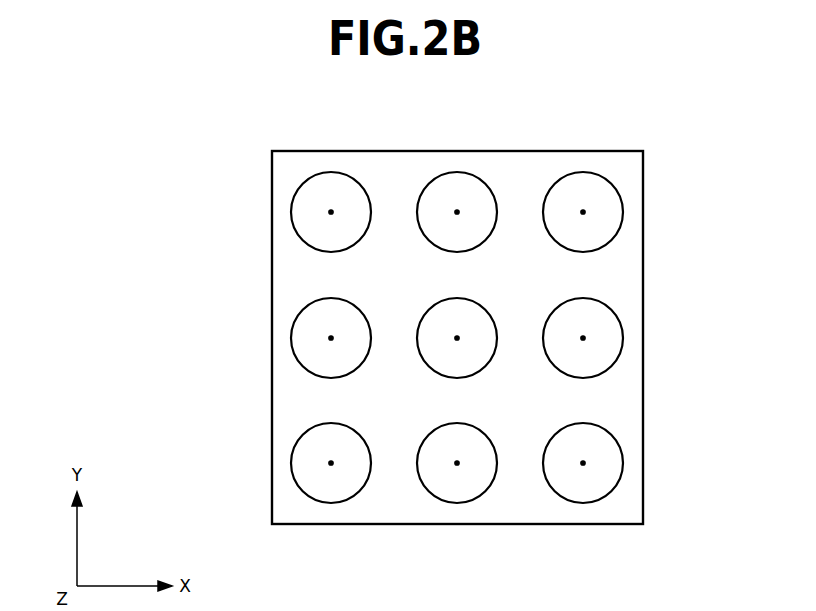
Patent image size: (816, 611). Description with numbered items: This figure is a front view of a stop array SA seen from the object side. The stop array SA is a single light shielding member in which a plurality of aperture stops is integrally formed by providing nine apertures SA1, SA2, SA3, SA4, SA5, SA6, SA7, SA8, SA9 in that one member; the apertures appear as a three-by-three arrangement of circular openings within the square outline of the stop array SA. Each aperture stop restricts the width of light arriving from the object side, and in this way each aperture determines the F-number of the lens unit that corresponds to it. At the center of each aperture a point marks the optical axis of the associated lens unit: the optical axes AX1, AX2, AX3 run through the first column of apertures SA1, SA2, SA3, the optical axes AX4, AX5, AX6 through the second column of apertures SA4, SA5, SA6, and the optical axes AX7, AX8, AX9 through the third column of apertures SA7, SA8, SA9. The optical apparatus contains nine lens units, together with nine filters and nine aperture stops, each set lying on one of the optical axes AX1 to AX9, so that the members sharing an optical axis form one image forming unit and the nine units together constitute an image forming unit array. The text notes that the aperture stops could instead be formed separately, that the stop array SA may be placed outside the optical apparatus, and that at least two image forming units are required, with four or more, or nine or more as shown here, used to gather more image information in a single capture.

The stop array SA is at (272, 268).
The aperture SA1 is at (291, 212).
The aperture SA2 is at (312, 372).
The aperture SA3 is at (330, 503).
The aperture SA4 is at (429, 240).
The aperture SA5 is at (432, 364).
The aperture SA6 is at (457, 503).
The aperture SA7 is at (623, 212).
The aperture SA8 is at (557, 364).
The aperture SA9 is at (582, 503).
The optical axis AX1 is at (331, 212).
The optical axis AX2 is at (331, 338).
The optical axis AX3 is at (331, 463).
The optical axis AX4 is at (457, 212).
The optical axis AX5 is at (457, 338).
The optical axis AX6 is at (457, 463).
The optical axis AX7 is at (583, 212).
The optical axis AX8 is at (583, 338).
The optical axis AX9 is at (583, 463).